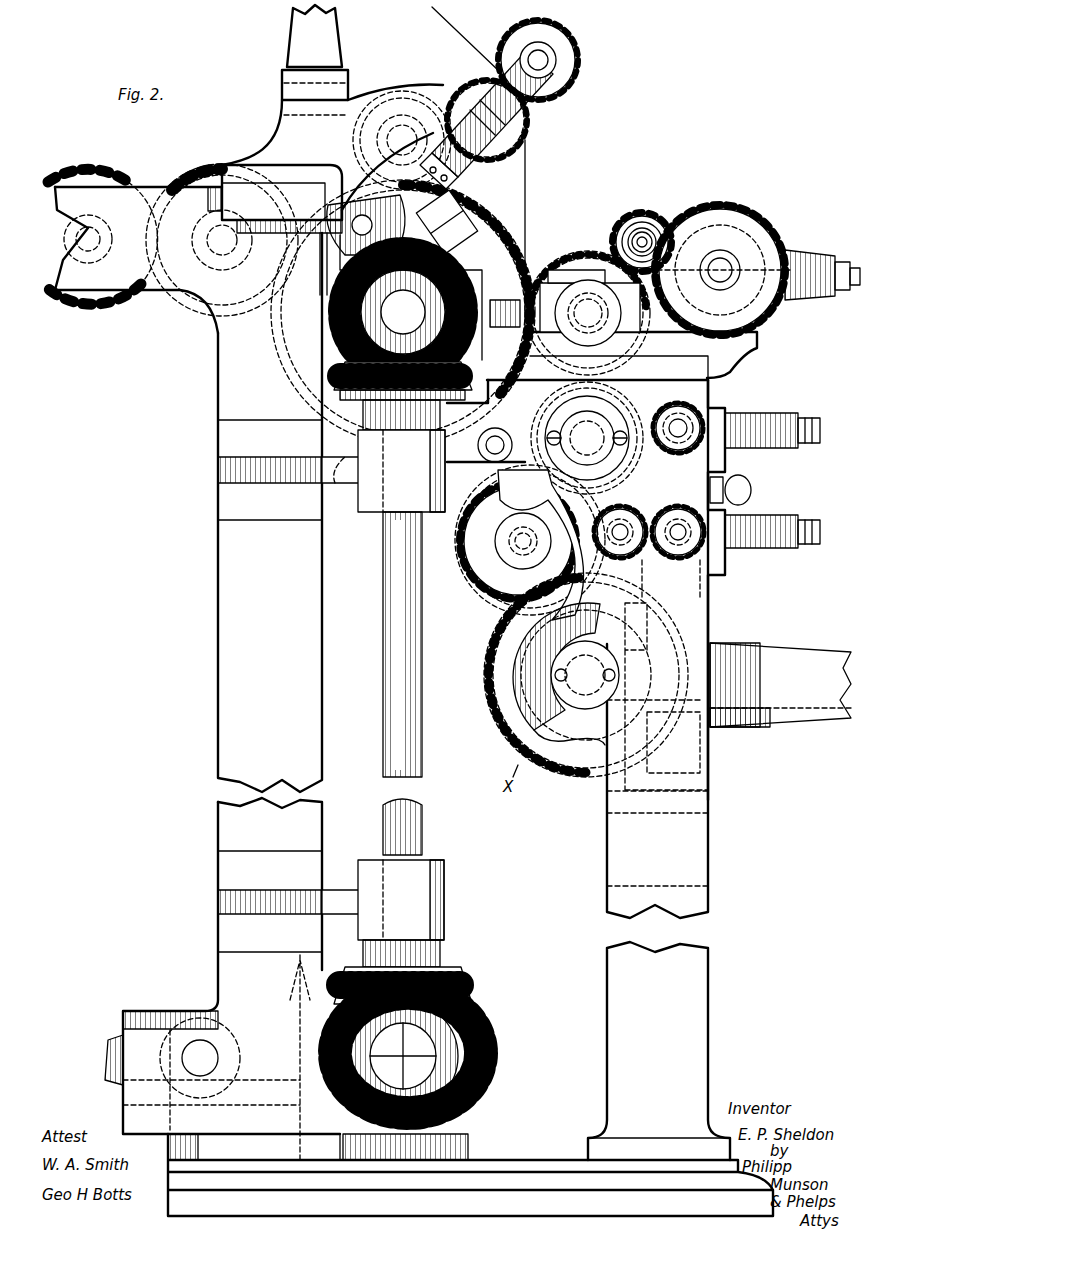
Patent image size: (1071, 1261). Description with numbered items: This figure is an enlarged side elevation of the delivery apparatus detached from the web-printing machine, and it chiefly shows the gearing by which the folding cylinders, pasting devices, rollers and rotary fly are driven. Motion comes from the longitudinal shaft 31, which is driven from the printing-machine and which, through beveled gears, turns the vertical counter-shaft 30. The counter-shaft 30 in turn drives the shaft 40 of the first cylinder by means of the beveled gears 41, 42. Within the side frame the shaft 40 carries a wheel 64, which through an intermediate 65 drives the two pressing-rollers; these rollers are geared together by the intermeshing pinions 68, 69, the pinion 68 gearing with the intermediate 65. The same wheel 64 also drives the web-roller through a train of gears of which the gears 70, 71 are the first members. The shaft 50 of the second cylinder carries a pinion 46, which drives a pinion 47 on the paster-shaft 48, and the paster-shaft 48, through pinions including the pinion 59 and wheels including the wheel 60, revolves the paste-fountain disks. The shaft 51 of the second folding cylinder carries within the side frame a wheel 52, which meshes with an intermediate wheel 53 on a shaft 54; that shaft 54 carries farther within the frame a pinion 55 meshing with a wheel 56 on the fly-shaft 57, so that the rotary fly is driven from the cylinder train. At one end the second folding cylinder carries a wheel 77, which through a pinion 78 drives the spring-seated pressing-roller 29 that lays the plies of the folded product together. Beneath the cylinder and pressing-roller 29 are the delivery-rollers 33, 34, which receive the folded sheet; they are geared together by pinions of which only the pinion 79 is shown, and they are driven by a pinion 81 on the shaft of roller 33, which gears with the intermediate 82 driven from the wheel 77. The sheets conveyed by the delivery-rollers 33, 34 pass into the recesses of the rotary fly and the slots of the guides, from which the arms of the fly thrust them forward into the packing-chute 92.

The pressing-roller 29 is at (678, 423).
The vertical counter-shaft 30 is at (427, 822).
The longitudinal shaft 31 is at (117, 1042).
The delivery-roller 33 is at (620, 529).
The delivery-roller 34 is at (678, 533).
The shaft of cylinder D 40 is at (403, 312).
The beveled gear 41 is at (355, 372).
The beveled gear 42 is at (345, 318).
The pinion 46 is at (580, 258).
The pinion 47 is at (640, 215).
The paster-shaft 48 is at (632, 236).
The shaft of cylinder E 50 is at (590, 308).
The shaft of cylinder F 51 is at (587, 438).
The wheel 52 is at (510, 486).
The intermediate wheel 53 is at (473, 570).
The shaft 54 is at (523, 541).
The pinion 55 is at (517, 524).
The wheel 56 is at (490, 646).
The fly-shaft 57 is at (585, 675).
The pinion 59 is at (653, 222).
The wheel 60 is at (787, 250).
The wheel 64 is at (493, 232).
The intermediate 65 is at (440, 178).
The pinion 68 is at (535, 118).
The pinion 69 is at (580, 70).
The gear 70 is at (200, 168).
The gear 71 is at (105, 176).
The wheel 77 is at (596, 437).
The pinion 78 is at (686, 410).
The pinion 79 is at (685, 553).
The pinion 81 is at (623, 545).
The intermediate 82 is at (712, 474).
The packing-chute 92 is at (780, 685).